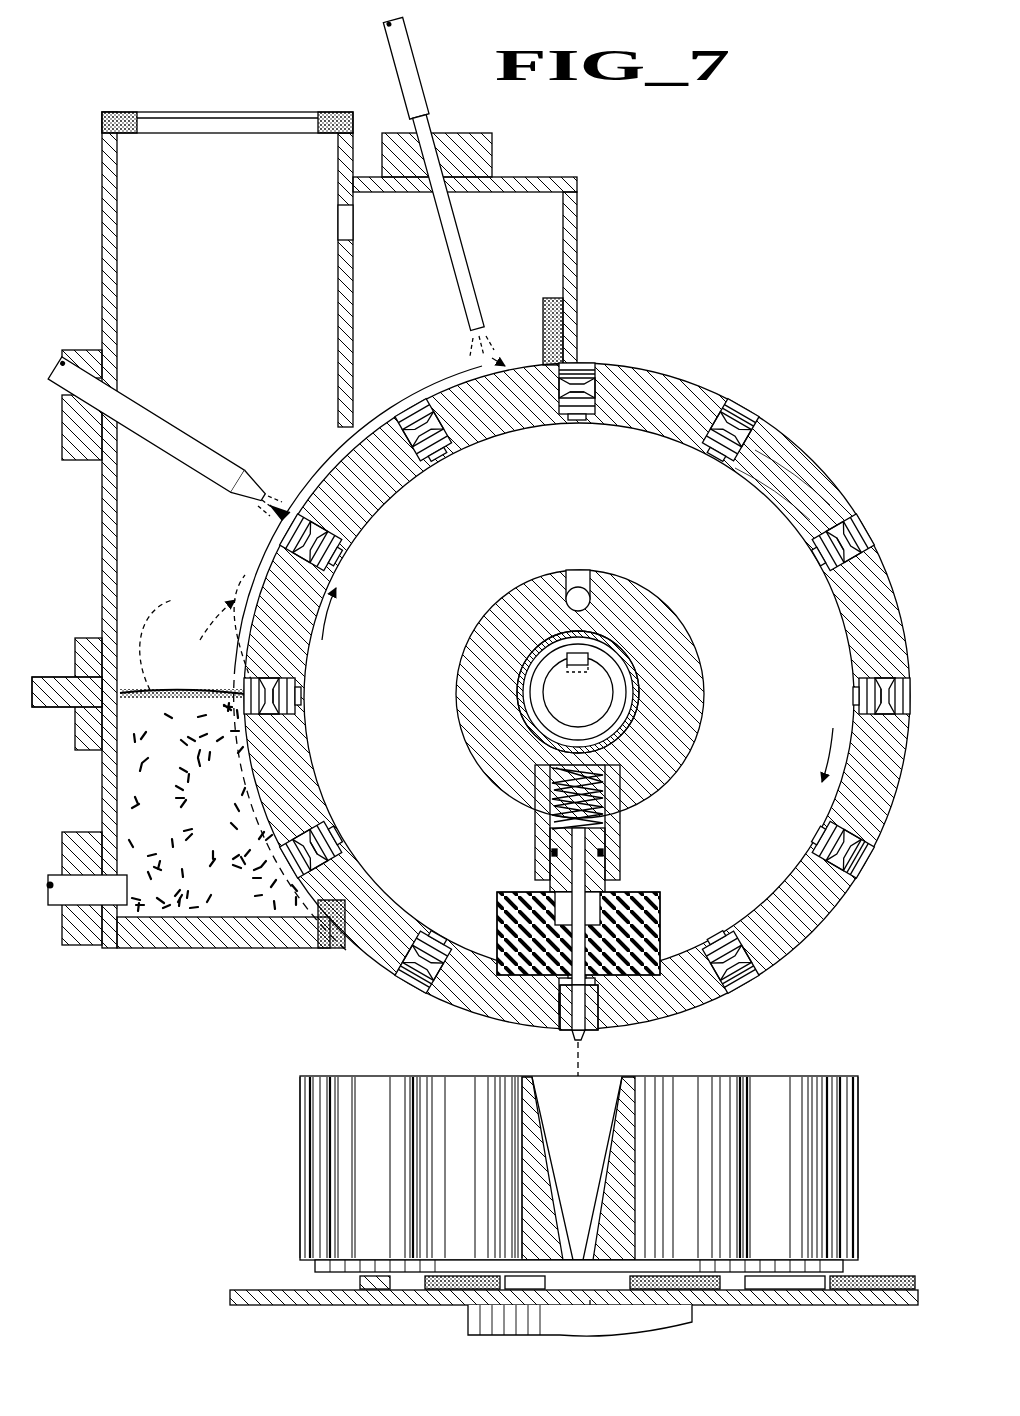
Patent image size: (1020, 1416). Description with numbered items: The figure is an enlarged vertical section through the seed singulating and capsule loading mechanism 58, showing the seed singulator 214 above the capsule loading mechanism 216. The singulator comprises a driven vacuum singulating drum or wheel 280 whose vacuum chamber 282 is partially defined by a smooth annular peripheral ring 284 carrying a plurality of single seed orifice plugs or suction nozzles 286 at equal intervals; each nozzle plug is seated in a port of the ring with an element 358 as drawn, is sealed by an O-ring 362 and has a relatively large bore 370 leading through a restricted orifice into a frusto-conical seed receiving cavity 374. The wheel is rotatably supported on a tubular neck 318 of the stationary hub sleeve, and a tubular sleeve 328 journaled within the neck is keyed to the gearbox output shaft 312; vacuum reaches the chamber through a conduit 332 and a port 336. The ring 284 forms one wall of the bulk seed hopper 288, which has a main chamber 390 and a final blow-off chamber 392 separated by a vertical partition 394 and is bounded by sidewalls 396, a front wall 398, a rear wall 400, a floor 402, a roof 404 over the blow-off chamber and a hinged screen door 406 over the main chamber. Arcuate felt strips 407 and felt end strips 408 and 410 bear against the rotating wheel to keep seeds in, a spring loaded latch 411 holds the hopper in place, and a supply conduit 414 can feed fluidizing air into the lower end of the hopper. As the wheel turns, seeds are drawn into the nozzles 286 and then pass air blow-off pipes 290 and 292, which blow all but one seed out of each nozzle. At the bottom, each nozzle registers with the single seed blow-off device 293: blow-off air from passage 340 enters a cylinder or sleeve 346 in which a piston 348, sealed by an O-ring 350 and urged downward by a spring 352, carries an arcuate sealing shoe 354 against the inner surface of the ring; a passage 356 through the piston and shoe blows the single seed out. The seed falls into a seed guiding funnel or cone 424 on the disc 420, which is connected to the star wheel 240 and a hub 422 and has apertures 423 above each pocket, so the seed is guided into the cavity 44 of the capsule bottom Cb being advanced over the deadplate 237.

The seed singulating and capsule loading mechanism 58 is at (735, 185).
The seed singulator 214 is at (712, 357).
The capsule loading mechanism 216 is at (298, 1140).
The deadplate 237 is at (235, 1292).
The star wheel 240 is at (350, 1281).
The vacuum singulating drum or wheel 280 is at (790, 433).
The vacuum chamber 282 is at (742, 485).
The annular peripheral flange or ring 284 is at (828, 484).
The single seed orifice plugs or suction nozzles 286 is at (588, 362).
The bulk seed hopper 288 is at (100, 160).
The air blow-off pipe 290 is at (150, 414).
The air blow-off pipe 292 is at (452, 218).
The single seed blow-off device 293 is at (672, 893).
The output shaft 312 is at (605, 697).
The tubular neck 318 is at (658, 600).
The tubular sleeve 328 is at (626, 668).
The conduit 332 is at (600, 586).
The port 336 is at (576, 572).
The passage 340 is at (555, 795).
The cylinder or sleeve 346 is at (616, 828).
The plunger or piston 348 is at (606, 872).
The O-ring 350 is at (608, 852).
The spring 352 is at (560, 826).
The arcuate sealing shoe 354 is at (497, 906).
The passage 356 is at (576, 878).
The roller 358 is at (578, 416).
The O-ring 362 is at (590, 378).
The bore 370 is at (352, 556).
The frusto-conical seed receiving cavity 374 is at (268, 520).
The main chamber 390 is at (130, 311).
The final blow-off chamber 392 is at (567, 255).
The vertical partition 394 is at (340, 292).
The sidewalls 396 is at (232, 205).
The front wall 398 is at (110, 277).
The rear wall 400 is at (578, 218).
The floor 402 is at (200, 948).
The roof 404 is at (522, 177).
The hinged screen door 406 is at (180, 112).
The arcuate felt strips 407 is at (337, 450).
The felt end strip 408 is at (330, 950).
The felt end strip 410 is at (560, 303).
The spring loaded latch 411 is at (55, 677).
The supply conduit 414 is at (52, 905).
The disc 420 is at (320, 1262).
The hub 422 is at (468, 1318).
The apertures 423 is at (610, 1260).
The seed guiding funnels or cones 424 is at (515, 1078).
The cavity 44 is at (598, 1300).
The capsule base or bottom Cb is at (432, 1282).